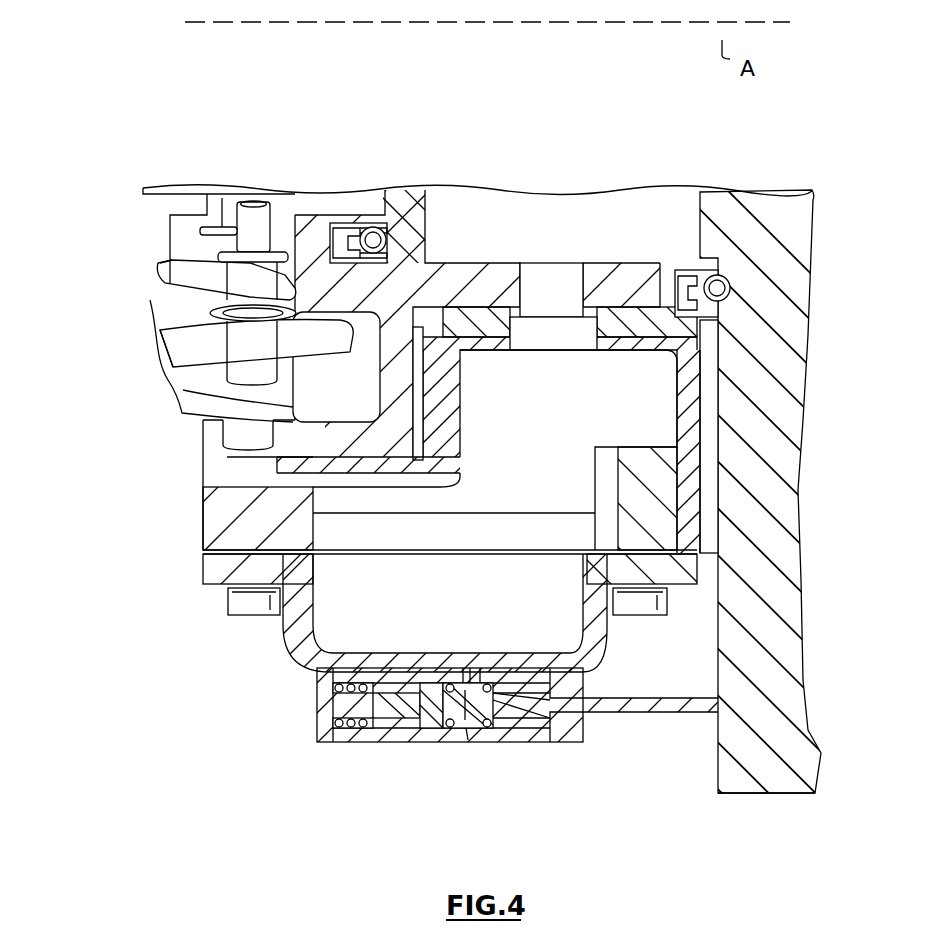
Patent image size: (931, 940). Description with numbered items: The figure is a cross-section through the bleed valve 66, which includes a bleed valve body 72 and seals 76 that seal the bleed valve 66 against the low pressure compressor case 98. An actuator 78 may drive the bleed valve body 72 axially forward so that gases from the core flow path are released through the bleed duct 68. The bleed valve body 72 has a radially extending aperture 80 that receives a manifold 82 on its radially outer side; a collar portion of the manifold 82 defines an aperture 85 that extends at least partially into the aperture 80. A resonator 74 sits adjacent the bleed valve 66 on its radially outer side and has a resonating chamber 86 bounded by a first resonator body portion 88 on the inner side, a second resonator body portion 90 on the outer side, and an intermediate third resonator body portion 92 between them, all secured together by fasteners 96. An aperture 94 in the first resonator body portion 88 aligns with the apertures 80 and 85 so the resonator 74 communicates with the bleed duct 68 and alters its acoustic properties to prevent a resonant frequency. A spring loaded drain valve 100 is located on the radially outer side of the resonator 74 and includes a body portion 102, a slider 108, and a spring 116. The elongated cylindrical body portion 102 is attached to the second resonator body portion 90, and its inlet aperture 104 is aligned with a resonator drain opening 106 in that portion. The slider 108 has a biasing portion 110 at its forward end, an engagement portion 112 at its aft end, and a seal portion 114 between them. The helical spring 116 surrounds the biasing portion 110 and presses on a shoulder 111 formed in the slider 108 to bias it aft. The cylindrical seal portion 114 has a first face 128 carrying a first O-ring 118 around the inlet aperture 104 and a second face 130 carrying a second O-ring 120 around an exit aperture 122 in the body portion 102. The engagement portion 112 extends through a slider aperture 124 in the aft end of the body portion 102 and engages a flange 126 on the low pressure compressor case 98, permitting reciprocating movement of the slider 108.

The bleed valve 66 is at (148, 240).
The bleed duct 68 is at (590, 198).
The bleed valve body 72 is at (312, 237).
The resonator 74 is at (357, 600).
The seals 76 is at (363, 228).
The actuator 78 is at (190, 358).
The aperture 80 is at (528, 262).
The manifold 82 is at (622, 312).
The aperture 85 is at (557, 262).
The resonating chamber 86 is at (594, 412).
The first resonator body portion 88 is at (437, 402).
The second resonator body portion 90 is at (597, 638).
The third resonator body portion 92 is at (207, 537).
The aperture 94 is at (545, 353).
The fasteners 96 is at (235, 602).
The low pressure compressor case 98 is at (413, 198).
The drain valve 100 is at (313, 750).
The body portion 102 is at (377, 743).
The inlet aperture 104 is at (485, 662).
The resonator drain opening 106 is at (471, 655).
The slider 108 is at (499, 722).
The biasing portion 110 is at (330, 693).
The shoulder 111 is at (373, 682).
The engagement portion 112 is at (610, 713).
The seal portion 114 is at (467, 708).
The spring 116 is at (343, 727).
The first O-ring 118 is at (503, 682).
The second O-ring 120 is at (448, 733).
The exit aperture 122 is at (477, 746).
The slider aperture 124 is at (583, 688).
The flange 126 is at (725, 772).
The first face 128 is at (463, 660).
The second face 130 is at (466, 730).